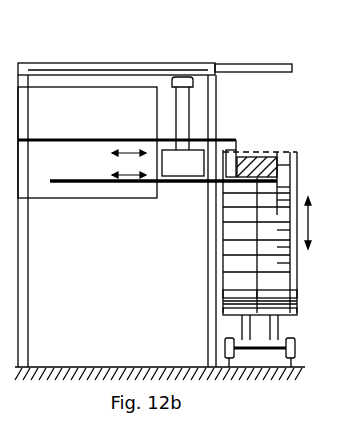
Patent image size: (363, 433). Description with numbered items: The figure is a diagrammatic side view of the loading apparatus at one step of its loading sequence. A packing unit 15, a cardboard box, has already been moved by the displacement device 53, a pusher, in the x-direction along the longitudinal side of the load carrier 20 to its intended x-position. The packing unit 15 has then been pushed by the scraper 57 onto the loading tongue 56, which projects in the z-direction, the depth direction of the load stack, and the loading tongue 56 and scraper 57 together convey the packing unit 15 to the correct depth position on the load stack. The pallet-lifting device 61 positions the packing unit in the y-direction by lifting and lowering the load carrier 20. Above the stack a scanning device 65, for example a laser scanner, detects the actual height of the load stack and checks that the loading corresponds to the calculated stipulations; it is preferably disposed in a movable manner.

The scanning device 65 is at (252, 77).
The scraper 57 is at (234, 140).
The packing unit 15 is at (270, 152).
The displacement device 53 is at (173, 170).
The loading tongue 56 is at (247, 181).
The pallet-lifting device 61 is at (283, 325).
The load carrier 20 is at (266, 336).